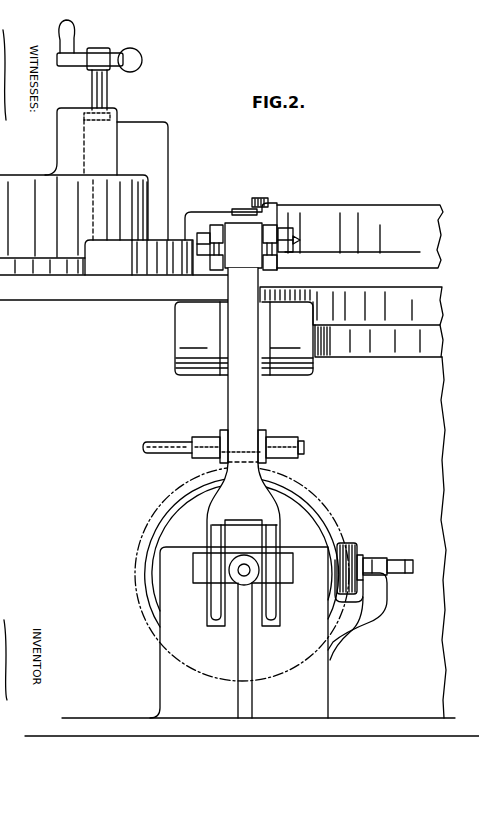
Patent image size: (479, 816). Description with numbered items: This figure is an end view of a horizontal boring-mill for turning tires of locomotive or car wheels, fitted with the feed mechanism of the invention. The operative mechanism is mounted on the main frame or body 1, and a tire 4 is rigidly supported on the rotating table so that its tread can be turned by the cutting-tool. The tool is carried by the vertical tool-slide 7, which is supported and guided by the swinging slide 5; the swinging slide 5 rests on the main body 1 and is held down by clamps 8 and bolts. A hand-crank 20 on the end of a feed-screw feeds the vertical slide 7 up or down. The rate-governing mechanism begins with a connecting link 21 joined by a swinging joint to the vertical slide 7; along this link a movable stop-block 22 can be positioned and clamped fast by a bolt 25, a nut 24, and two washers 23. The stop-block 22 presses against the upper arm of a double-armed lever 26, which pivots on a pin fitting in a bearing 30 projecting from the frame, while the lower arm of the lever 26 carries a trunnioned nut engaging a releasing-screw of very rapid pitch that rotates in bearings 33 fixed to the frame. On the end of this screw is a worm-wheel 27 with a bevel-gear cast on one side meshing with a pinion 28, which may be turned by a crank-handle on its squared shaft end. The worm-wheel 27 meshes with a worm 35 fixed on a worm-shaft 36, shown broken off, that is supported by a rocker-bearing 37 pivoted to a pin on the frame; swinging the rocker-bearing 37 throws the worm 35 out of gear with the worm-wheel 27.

The main frame 1 is at (374, 623).
The tire 4 is at (351, 270).
The swinging slide 5 is at (58, 141).
The vertical tool-slide 7 is at (142, 181).
The clamps 8 is at (139, 257).
The hand-crank 20 is at (99, 65).
The connecting link 21 is at (270, 272).
The stop-block 22 is at (243, 245).
The washers 23 is at (218, 225).
The nut 24 is at (300, 240).
The bolt 25 is at (200, 233).
The double-armed lever 26 is at (243, 447).
The worm-wheel 27 is at (312, 486).
The pinion 28 is at (366, 556).
The bearing 30 is at (180, 330).
The bearings 33 is at (236, 590).
The worm 35 is at (222, 452).
The worm-shaft 36 is at (167, 437).
The rocker-bearing 37 is at (249, 441).